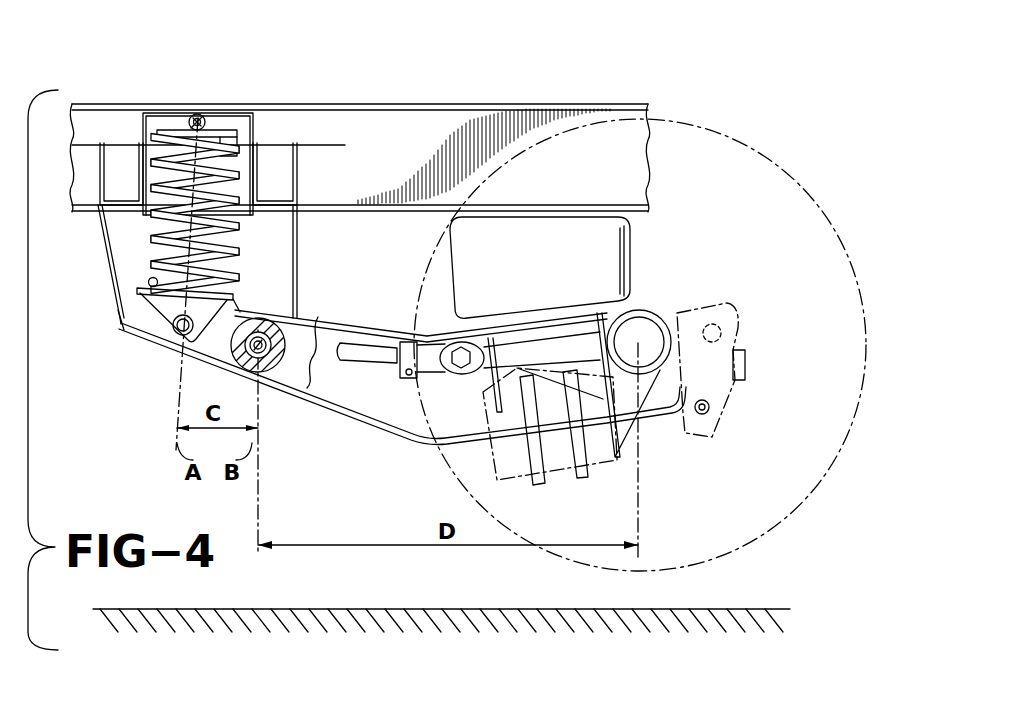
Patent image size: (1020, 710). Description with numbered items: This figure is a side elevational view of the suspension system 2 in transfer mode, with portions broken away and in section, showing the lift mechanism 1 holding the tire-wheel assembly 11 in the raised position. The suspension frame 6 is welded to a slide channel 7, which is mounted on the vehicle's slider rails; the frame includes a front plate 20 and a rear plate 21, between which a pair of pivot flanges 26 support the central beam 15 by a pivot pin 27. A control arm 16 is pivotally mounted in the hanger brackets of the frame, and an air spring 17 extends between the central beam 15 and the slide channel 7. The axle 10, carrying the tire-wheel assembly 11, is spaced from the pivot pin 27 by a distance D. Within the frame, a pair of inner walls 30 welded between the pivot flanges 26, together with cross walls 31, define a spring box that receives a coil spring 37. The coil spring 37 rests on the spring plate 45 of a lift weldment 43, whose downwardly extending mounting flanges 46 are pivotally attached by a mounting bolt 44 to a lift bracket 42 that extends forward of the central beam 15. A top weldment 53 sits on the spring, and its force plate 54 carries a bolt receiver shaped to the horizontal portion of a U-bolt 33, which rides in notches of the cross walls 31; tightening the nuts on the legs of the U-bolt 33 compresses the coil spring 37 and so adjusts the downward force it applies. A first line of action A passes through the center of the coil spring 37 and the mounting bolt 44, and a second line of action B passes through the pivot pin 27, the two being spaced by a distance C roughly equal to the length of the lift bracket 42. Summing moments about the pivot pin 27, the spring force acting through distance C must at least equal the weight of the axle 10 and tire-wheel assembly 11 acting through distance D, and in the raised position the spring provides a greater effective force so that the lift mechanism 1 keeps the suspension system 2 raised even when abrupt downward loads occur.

The lift mechanism 1 is at (125, 236).
The suspension system 2 is at (132, 471).
The suspension frame 6 is at (110, 316).
The slide channel 7 is at (637, 187).
The axle 10 is at (637, 310).
The tire-wheel assembly 11 is at (432, 470).
The central beam 15 is at (390, 410).
The control arm 16 is at (380, 350).
The air spring 17 is at (597, 253).
The front plate 20 is at (298, 238).
The rear plate 21 is at (114, 297).
The pivot flange 26 is at (240, 368).
The pivot pin 27 is at (263, 348).
The inner wall 30 is at (142, 120).
The cross wall 31 is at (242, 120).
The U-bolt 33 is at (196, 113).
The coil spring 37 is at (227, 262).
The lift bracket 42 is at (222, 327).
The lift weldment 43 is at (247, 289).
The mounting bolt 44 is at (177, 330).
The spring plate 45 is at (150, 287).
The mounting flange 46 is at (163, 308).
The top weldment 53 is at (169, 122).
The force plate 54 is at (218, 135).